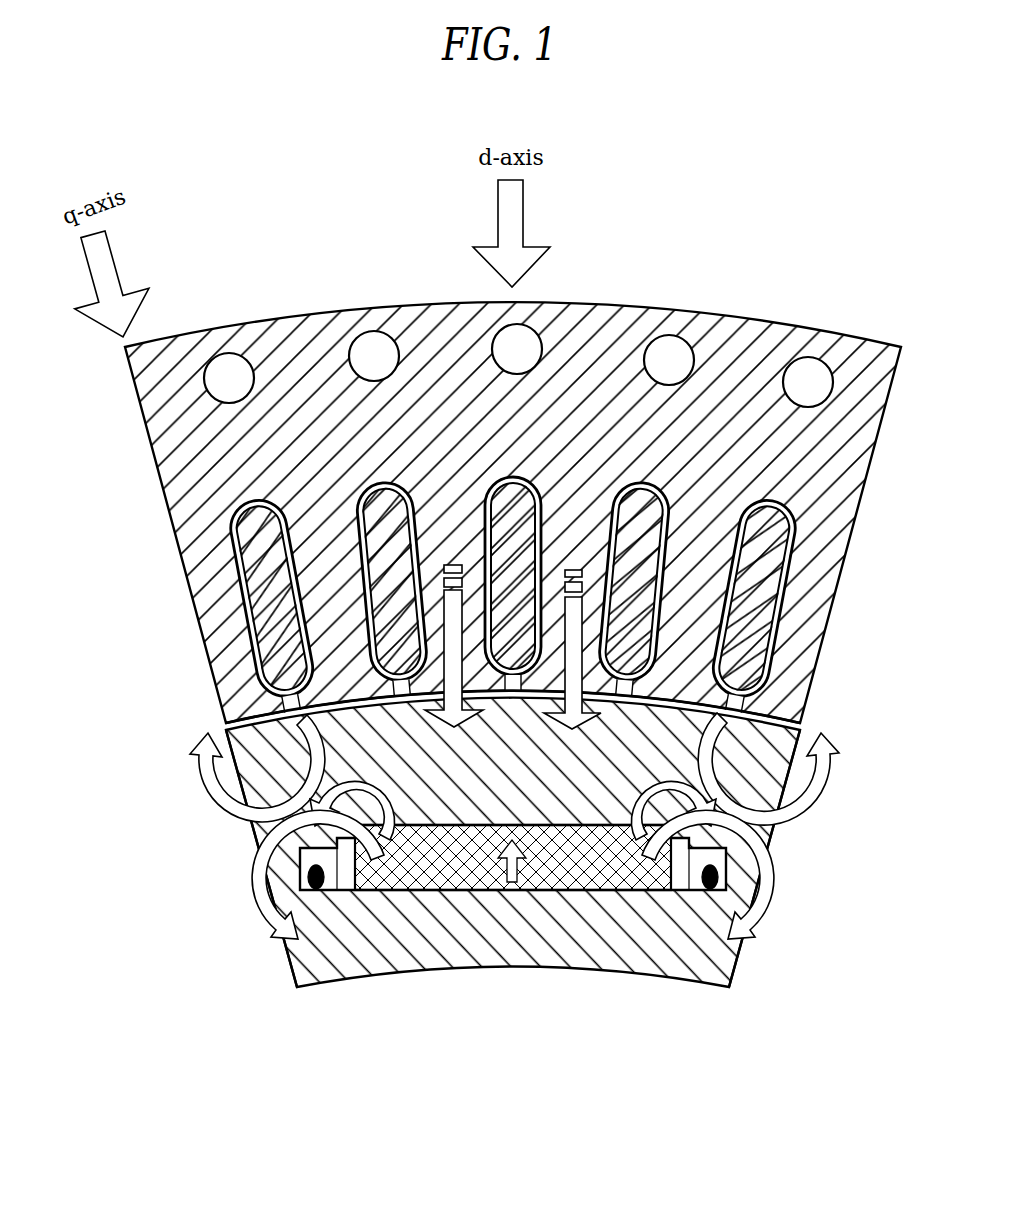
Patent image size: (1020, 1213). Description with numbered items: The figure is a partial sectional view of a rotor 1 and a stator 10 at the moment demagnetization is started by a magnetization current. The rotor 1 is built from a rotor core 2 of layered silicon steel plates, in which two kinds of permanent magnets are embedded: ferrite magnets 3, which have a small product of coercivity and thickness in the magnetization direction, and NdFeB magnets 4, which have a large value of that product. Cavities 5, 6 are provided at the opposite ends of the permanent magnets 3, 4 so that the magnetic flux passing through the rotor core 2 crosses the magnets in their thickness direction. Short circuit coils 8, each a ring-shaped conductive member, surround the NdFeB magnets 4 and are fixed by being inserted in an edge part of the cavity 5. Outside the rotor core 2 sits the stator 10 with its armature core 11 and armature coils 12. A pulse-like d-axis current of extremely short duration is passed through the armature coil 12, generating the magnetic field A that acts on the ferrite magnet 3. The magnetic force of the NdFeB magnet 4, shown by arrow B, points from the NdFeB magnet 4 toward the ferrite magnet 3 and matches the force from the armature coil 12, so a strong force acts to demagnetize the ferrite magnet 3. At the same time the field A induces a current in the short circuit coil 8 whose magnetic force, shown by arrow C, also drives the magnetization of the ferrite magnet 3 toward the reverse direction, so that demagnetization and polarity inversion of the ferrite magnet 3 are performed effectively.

The rotor 1 is at (514, 856).
The rotor core 2 is at (573, 968).
The permanent magnet (ferrite magnet) 3 is at (245, 850).
The permanent magnet (NdFeB magnet) 4 is at (467, 893).
The cavity 5 is at (227, 722).
The cavity 6 is at (350, 893).
The short circuit coil 8 is at (264, 917).
The stator 10 is at (482, 512).
The armature core 11 is at (183, 517).
The armature coil 12 is at (280, 630).
The magnetic field A is at (176, 746).
The magnetic force direction of NdFeB magnet B is at (490, 810).
The magnetic force of short circuit coil C is at (260, 950).